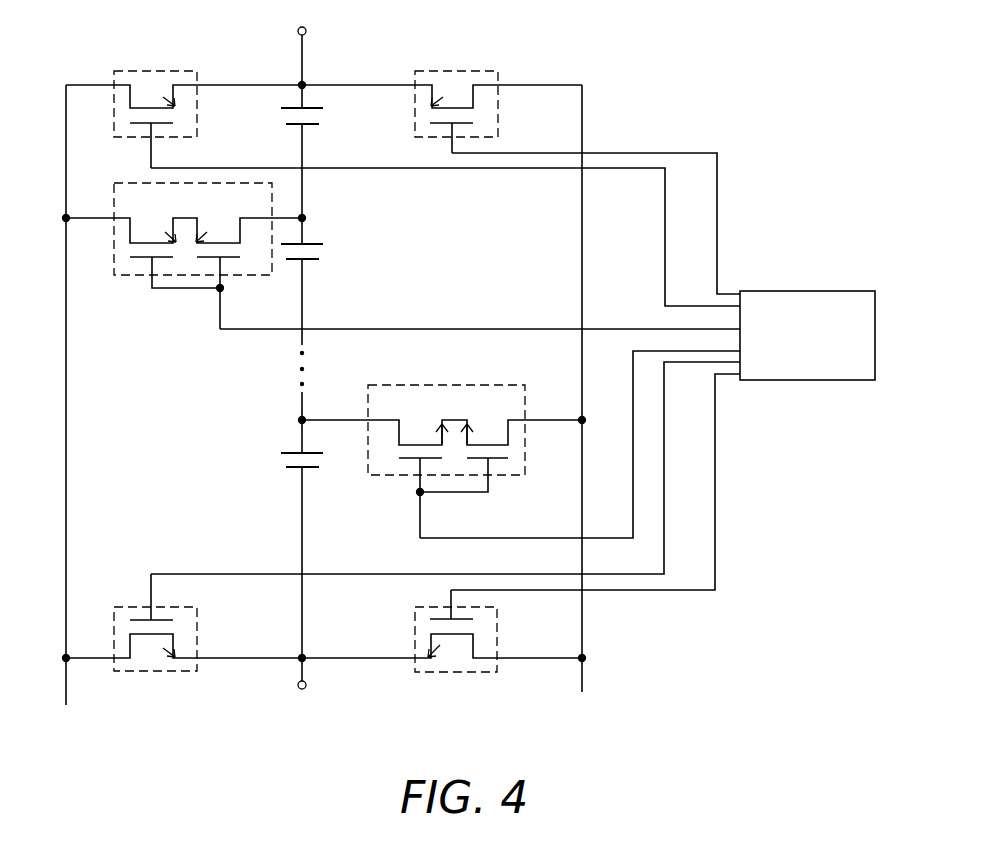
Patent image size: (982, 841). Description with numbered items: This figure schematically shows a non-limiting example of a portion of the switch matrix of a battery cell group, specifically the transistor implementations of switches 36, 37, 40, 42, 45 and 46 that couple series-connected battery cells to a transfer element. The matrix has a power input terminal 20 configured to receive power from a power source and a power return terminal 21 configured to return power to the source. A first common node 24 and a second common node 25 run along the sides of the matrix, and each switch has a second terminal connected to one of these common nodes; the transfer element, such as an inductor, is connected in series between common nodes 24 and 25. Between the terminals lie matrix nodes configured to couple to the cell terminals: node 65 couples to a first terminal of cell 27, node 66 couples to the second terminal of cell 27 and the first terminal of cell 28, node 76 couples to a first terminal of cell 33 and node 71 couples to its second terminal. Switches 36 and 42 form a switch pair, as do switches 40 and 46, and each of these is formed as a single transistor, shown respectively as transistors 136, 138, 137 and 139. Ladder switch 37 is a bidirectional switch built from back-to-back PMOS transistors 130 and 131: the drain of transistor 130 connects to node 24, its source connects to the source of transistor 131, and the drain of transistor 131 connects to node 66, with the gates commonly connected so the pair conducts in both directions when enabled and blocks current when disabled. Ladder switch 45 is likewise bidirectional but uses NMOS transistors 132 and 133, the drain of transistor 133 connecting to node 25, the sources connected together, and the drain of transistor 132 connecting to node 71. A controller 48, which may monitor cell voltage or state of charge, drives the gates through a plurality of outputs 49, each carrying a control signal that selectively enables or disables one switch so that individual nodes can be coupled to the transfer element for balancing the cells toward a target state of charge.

The power input terminal 20 is at (298, 26).
The power return terminal 21 is at (298, 691).
The common node 24 is at (66, 370).
The common node 25 is at (582, 275).
The battery cell 27 is at (317, 117).
The battery cell 28 is at (317, 252).
The battery cell 33 is at (284, 462).
The switch 36 is at (145, 97).
The ladder switch 37 is at (185, 237).
The switch 40 is at (141, 648).
The switch 42 is at (447, 90).
The ladder switch 45 is at (456, 442).
The switch 46 is at (440, 656).
The controller 48 is at (792, 290).
The outputs 49 is at (652, 293).
The node 65 is at (307, 82).
The node 66 is at (308, 213).
The node 71 is at (305, 417).
The node 76 is at (305, 655).
The PMOS transistor 130 is at (140, 250).
The PMOS transistor 131 is at (230, 250).
The NMOS transistor 132 is at (407, 452).
The NMOS transistor 133 is at (500, 452).
The transistor 136 is at (155, 95).
The transistor 137 is at (152, 648).
The transistor 138 is at (455, 95).
The transistor 139 is at (452, 647).